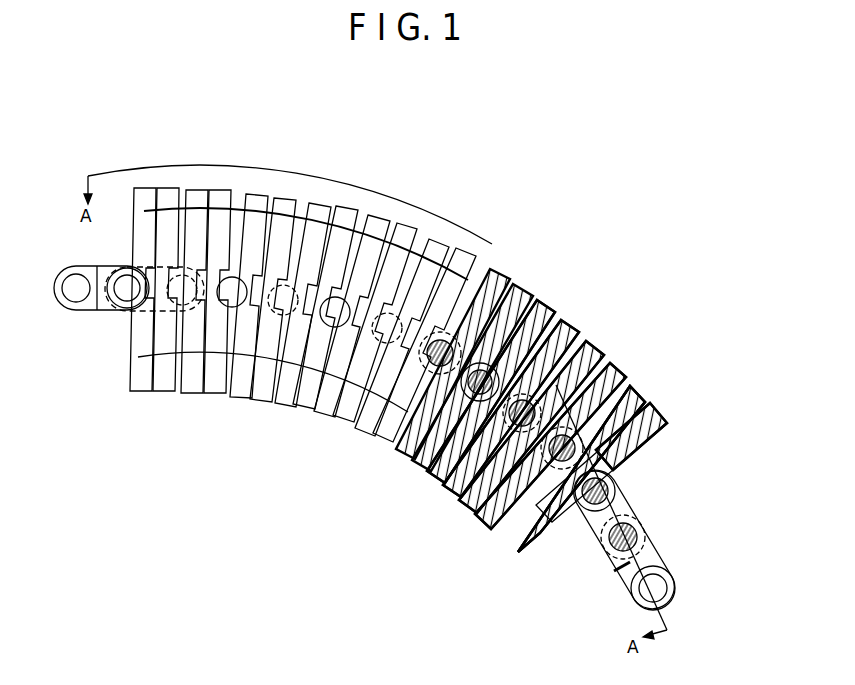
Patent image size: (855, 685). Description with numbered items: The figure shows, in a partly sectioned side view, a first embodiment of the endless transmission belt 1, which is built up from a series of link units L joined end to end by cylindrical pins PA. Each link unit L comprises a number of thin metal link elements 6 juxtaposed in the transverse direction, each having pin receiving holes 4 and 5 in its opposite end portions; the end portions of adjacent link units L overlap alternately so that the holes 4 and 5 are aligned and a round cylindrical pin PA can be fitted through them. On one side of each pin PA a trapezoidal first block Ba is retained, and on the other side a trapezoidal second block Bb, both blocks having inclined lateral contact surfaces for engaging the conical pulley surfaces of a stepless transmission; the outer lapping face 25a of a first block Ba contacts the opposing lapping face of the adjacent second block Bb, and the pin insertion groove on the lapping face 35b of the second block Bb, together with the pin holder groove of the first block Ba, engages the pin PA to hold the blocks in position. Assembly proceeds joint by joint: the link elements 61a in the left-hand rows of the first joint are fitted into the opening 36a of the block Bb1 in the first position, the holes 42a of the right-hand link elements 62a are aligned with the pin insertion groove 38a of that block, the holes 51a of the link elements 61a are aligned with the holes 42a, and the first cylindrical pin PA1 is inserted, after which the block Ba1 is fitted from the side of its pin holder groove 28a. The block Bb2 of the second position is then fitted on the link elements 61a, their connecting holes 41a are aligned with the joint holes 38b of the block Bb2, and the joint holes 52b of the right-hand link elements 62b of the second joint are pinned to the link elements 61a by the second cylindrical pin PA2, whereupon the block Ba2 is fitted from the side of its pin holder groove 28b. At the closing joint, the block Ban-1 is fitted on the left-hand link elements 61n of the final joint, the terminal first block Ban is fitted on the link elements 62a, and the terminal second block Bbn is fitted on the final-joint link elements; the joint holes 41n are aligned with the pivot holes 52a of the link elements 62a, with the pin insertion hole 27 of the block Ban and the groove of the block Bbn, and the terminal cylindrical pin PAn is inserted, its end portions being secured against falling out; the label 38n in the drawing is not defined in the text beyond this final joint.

The endless transmission belt 1 is at (665, 318).
The pin receiving hole 4 is at (615, 556).
The pin receiving hole 5 is at (648, 592).
The link element 6 is at (654, 557).
The outer lapping face 25a is at (645, 400).
The pin insertion hole 27 is at (524, 557).
The pin holder groove 28a is at (480, 470).
The pin holder groove 28b is at (370, 432).
The inner lapping face 35b is at (658, 412).
The opening 36a is at (585, 342).
The pin insertion groove 38a is at (465, 503).
The joint hole 38b is at (530, 290).
The lever 38n is at (573, 527).
The connecting hole 41a is at (415, 437).
The joint hole 41n is at (498, 528).
The hole 42a is at (572, 335).
The hole 51a is at (440, 478).
The pivot hole 52a is at (623, 382).
The joint hole 52b is at (363, 425).
The link element 61a is at (415, 447).
The link element 61n is at (555, 530).
The link element 62a is at (487, 524).
The link element 62b is at (437, 338).
The first block Ba is at (223, 195).
The second block Bb is at (196, 195).
The first block in the first position Ba1 is at (567, 318).
The first block in the second position Ba2 is at (518, 283).
The terminal first block Ban is at (637, 388).
The block in the n-1 position Ban-1 is at (670, 422).
The second block in the first position Bb1 is at (592, 362).
The second block in the second position Bb2 is at (548, 310).
The terminal second block Bbn is at (650, 404).
The link unit L is at (648, 484).
The cylindrical pin PA is at (613, 523).
The first cylindrical pin PA1 is at (430, 455).
The second cylindrical pin PA2 is at (443, 357).
The terminal cylindrical pin PAn is at (590, 350).